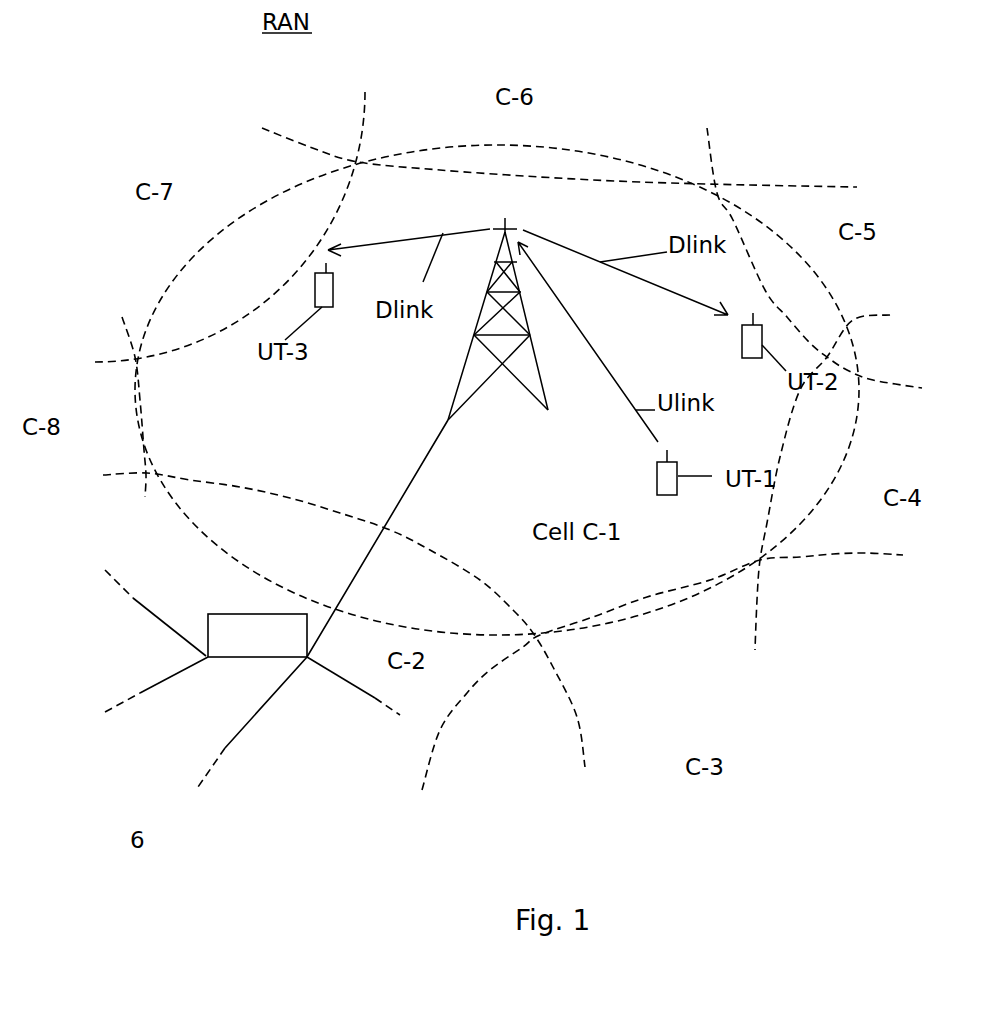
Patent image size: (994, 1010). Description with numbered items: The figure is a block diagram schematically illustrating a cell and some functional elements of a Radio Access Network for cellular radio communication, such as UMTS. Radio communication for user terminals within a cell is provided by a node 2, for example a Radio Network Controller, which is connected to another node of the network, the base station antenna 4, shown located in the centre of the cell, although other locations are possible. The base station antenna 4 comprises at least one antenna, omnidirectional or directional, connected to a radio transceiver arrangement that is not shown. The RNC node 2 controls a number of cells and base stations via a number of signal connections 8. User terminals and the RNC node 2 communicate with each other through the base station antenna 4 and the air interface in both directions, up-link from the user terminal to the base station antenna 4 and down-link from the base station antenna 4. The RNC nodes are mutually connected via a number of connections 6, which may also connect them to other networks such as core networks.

The node 2 is at (265, 647).
The base station antenna 4 is at (548, 402).
The connections 6 is at (178, 668).
The signal connections 8 is at (425, 450).